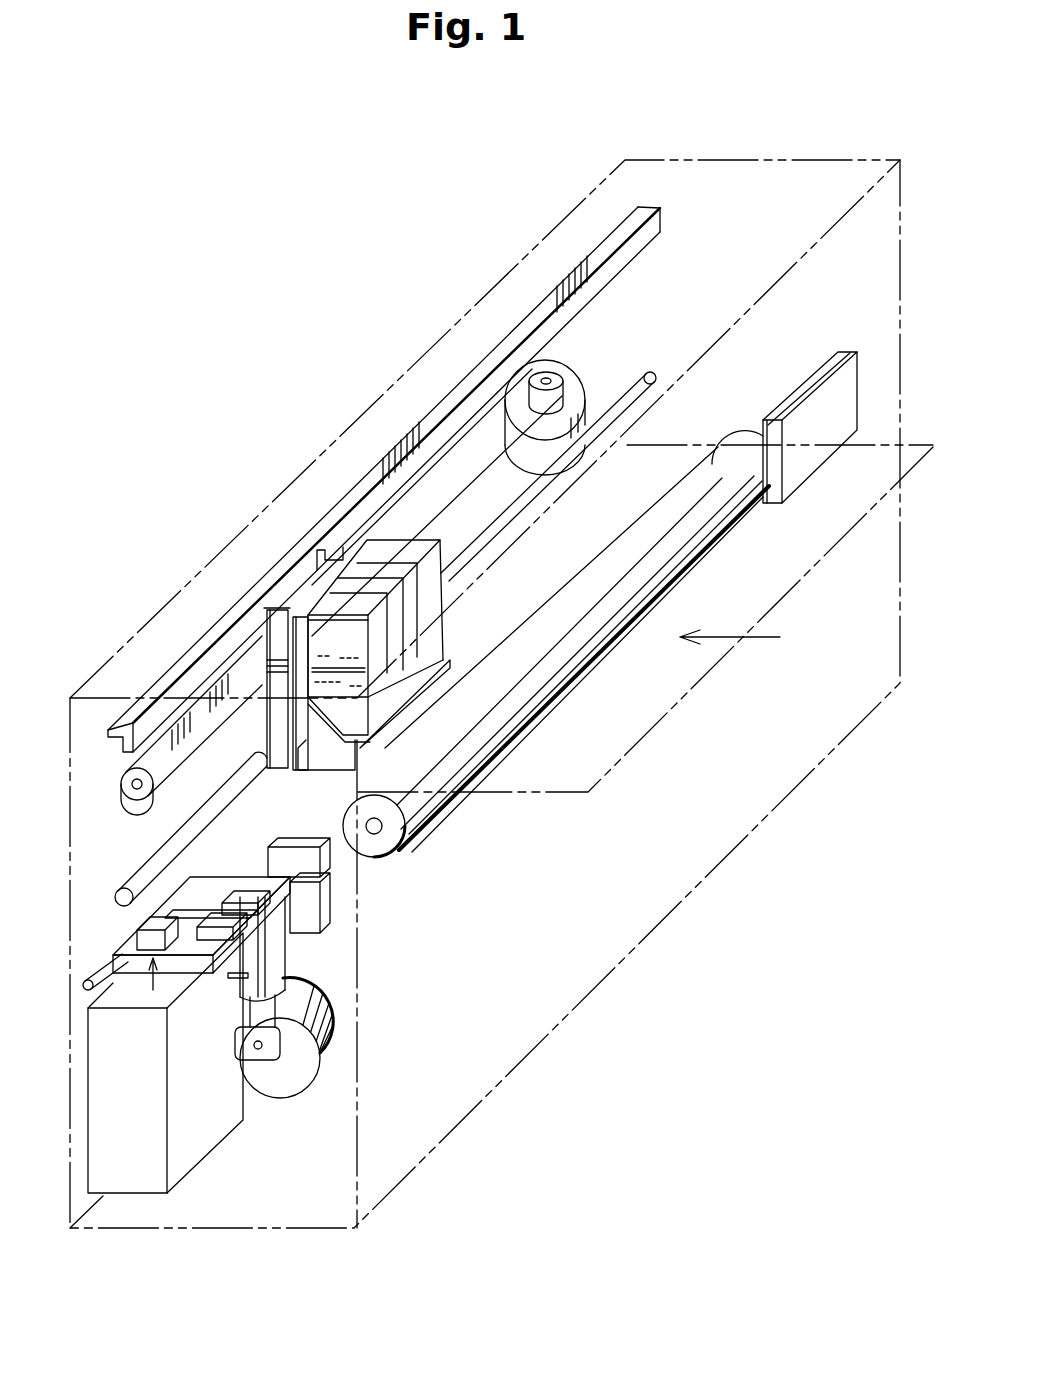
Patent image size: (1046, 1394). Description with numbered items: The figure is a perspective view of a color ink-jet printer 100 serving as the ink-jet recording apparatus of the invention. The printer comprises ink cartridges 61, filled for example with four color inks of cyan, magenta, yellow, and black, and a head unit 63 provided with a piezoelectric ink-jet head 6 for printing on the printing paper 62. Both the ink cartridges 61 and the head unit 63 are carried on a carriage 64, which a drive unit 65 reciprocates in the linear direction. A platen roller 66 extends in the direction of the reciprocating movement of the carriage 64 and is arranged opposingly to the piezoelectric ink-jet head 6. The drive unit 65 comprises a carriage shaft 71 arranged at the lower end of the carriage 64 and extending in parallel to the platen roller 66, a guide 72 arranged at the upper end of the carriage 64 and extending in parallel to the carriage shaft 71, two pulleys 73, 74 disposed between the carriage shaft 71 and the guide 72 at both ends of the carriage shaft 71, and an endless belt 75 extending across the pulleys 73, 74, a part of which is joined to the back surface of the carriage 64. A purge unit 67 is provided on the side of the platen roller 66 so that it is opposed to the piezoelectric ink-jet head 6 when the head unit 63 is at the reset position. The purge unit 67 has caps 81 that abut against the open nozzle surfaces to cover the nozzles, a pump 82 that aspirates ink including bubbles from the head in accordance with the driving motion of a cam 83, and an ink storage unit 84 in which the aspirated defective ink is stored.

The color ink-jet printer 100 is at (392, 216).
The piezoelectric ink-jet head 6 is at (413, 720).
The ink cartridges 61 is at (400, 550).
The printing paper 62 is at (818, 548).
The head unit 63 is at (450, 668).
The carriage 64 is at (270, 647).
The drive unit 65 is at (642, 366).
The platen roller 66 is at (393, 840).
The purge unit 67 is at (249, 865).
The carriage shaft 71 is at (650, 385).
The guide 72 is at (597, 255).
The pulley 73 is at (543, 378).
The pulley 74 is at (120, 783).
The endless belt 75 is at (493, 467).
The caps 81 is at (243, 920).
The pump 82 is at (287, 963).
The cam 83 is at (293, 1077).
The ink storage unit 84 is at (205, 1135).